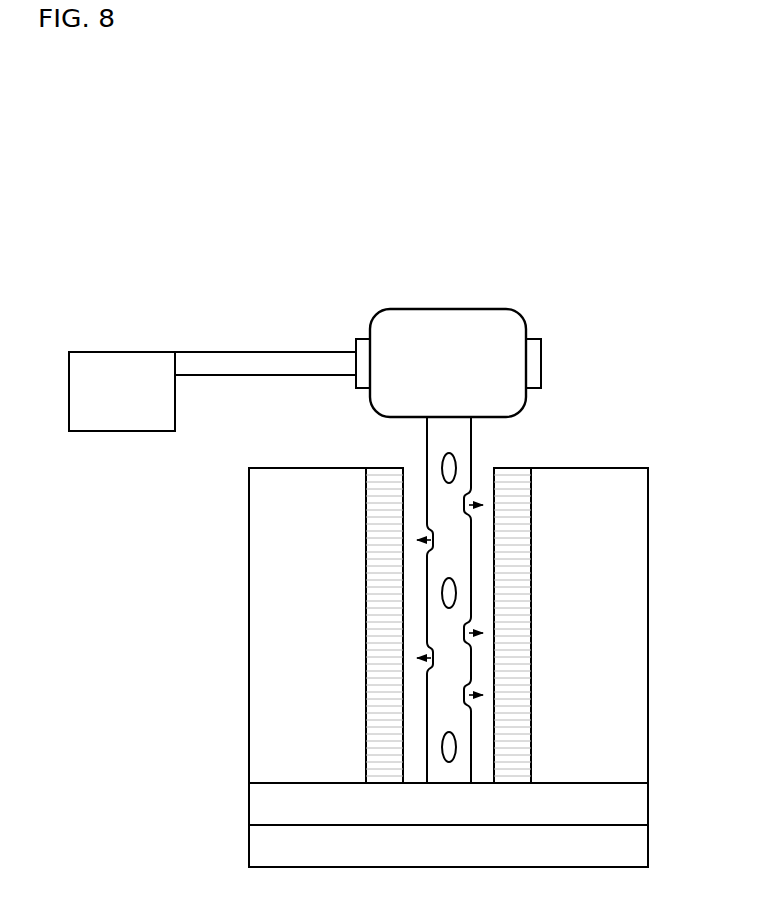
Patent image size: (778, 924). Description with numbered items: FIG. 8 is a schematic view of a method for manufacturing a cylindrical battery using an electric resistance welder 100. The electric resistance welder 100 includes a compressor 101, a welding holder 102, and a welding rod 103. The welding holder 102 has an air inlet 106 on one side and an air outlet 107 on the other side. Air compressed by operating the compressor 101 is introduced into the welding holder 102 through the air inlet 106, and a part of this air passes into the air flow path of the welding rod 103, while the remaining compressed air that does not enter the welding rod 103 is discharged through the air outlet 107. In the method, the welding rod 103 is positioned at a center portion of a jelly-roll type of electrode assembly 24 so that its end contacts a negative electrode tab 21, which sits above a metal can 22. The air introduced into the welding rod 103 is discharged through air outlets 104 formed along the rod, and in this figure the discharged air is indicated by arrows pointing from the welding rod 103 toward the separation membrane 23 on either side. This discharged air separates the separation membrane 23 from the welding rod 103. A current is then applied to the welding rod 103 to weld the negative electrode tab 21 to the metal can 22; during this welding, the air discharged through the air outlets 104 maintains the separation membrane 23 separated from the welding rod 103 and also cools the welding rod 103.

The electric resistance welder 100 is at (417, 266).
The compressor 101 is at (115, 365).
The welding holder 102 is at (495, 317).
The welding rod 103 is at (432, 504).
The air outlets 104 is at (465, 514).
The air inlet 106 is at (362, 340).
The air outlet 107 is at (533, 340).
The negative electrode tab 21 is at (645, 803).
The metal can 22 is at (645, 852).
The separation membrane 23 is at (393, 682).
The jelly-roll type of electrode assembly 24 is at (258, 704).